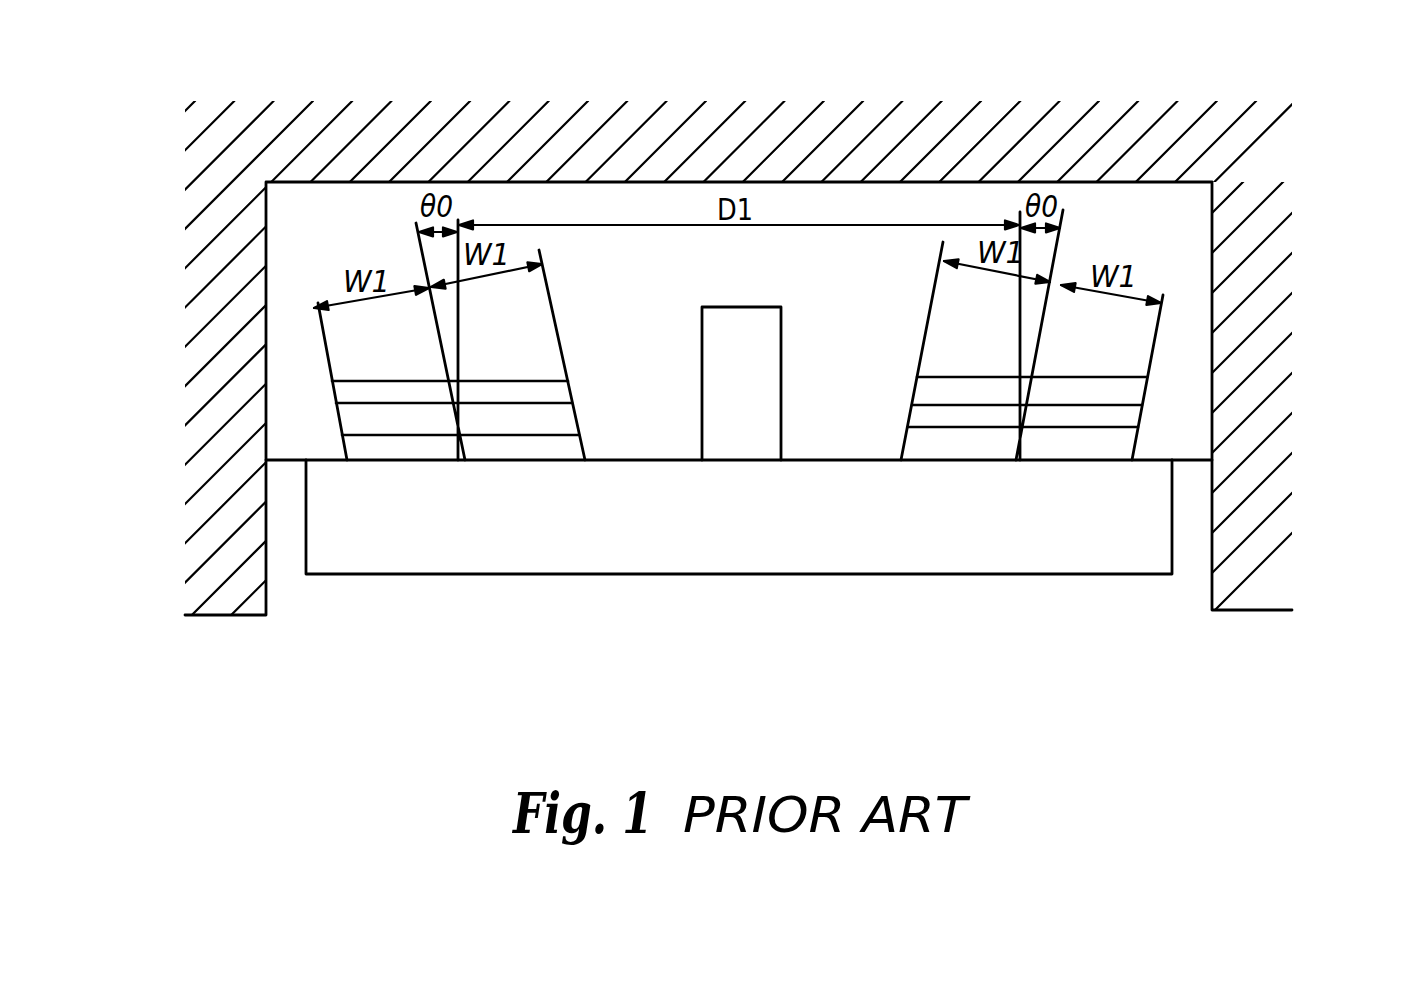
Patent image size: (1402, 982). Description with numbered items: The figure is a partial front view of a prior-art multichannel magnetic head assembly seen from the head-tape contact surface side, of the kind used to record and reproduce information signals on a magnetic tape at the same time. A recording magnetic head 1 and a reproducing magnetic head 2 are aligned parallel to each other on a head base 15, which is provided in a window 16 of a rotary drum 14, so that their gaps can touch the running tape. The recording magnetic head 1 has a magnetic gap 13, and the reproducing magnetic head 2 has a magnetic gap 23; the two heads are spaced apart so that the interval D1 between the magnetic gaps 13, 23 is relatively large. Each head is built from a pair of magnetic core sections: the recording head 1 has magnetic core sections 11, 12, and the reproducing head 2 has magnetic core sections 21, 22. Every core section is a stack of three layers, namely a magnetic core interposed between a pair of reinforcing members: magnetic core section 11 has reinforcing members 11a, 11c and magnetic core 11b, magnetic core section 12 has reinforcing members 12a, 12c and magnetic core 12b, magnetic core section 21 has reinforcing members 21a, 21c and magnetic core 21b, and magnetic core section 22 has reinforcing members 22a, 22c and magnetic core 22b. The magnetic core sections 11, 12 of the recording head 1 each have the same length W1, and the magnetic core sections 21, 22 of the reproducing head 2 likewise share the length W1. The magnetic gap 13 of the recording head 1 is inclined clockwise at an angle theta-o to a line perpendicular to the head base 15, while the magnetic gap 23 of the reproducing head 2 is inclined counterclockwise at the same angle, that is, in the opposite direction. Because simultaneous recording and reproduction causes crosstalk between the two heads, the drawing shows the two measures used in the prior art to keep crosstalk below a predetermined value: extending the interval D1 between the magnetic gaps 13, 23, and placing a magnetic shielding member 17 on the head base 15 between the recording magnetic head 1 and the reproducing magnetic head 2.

The recording magnetic head 1 is at (1092, 454).
The reproducing magnetic head 2 is at (386, 459).
The magnetic core section 11 is at (1243, 495).
The reinforcing member 11a is at (1124, 438).
The magnetic core 11b is at (1124, 425).
The reinforcing member 11c is at (1124, 397).
The magnetic core section 12 is at (977, 469).
The reinforcing member 12a is at (917, 443).
The magnetic core 12b is at (920, 417).
The reinforcing member 12c is at (923, 392).
The magnetic gap 13 is at (1020, 440).
The rotary drum 14 is at (1260, 583).
The head base 15 is at (767, 558).
The window 16 is at (1180, 273).
The magnetic shielding member 17 is at (732, 440).
The magnetic core section 21 is at (599, 473).
The reinforcing member 21a is at (572, 450).
The magnetic core 21b is at (567, 422).
The reinforcing member 21c is at (575, 395).
The magnetic core section 22 is at (339, 499).
The reinforcing member 22a is at (348, 455).
The magnetic core 22b is at (343, 427).
The reinforcing member 22c is at (345, 395).
The magnetic gap 23 is at (461, 418).